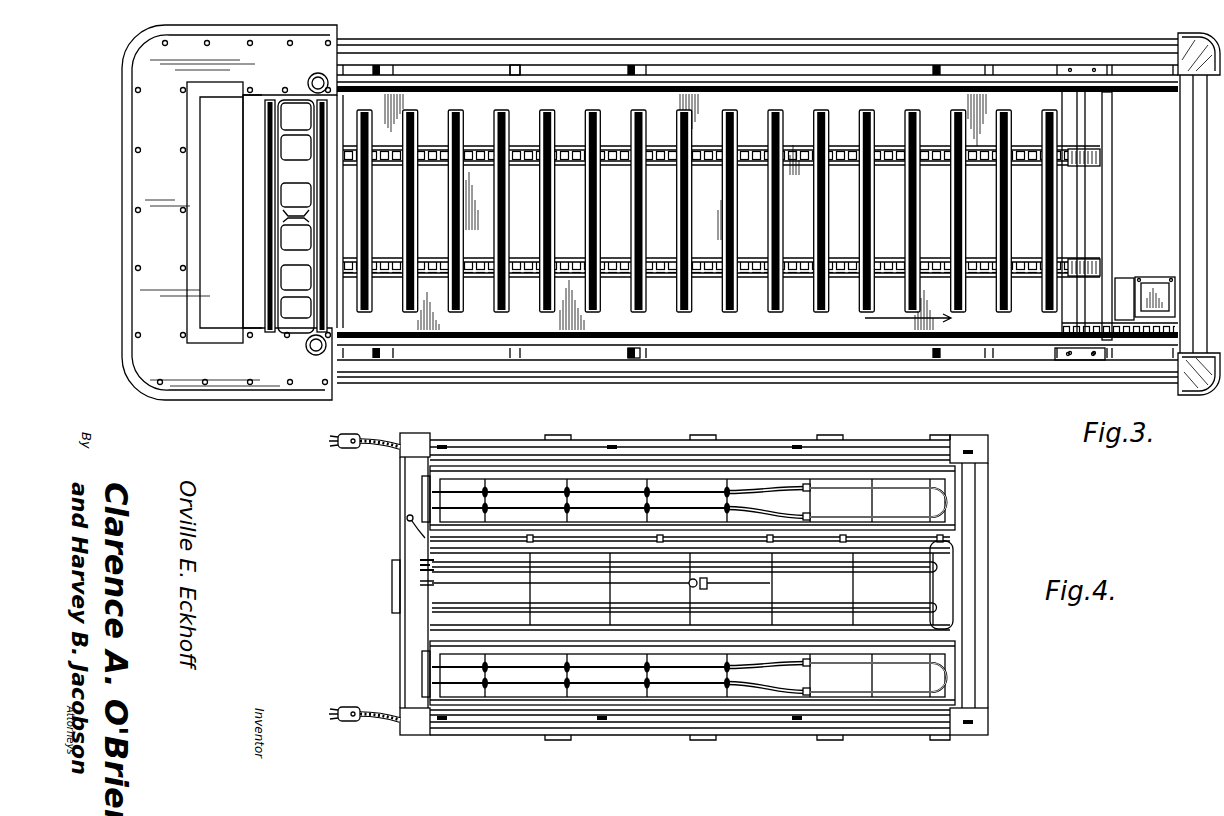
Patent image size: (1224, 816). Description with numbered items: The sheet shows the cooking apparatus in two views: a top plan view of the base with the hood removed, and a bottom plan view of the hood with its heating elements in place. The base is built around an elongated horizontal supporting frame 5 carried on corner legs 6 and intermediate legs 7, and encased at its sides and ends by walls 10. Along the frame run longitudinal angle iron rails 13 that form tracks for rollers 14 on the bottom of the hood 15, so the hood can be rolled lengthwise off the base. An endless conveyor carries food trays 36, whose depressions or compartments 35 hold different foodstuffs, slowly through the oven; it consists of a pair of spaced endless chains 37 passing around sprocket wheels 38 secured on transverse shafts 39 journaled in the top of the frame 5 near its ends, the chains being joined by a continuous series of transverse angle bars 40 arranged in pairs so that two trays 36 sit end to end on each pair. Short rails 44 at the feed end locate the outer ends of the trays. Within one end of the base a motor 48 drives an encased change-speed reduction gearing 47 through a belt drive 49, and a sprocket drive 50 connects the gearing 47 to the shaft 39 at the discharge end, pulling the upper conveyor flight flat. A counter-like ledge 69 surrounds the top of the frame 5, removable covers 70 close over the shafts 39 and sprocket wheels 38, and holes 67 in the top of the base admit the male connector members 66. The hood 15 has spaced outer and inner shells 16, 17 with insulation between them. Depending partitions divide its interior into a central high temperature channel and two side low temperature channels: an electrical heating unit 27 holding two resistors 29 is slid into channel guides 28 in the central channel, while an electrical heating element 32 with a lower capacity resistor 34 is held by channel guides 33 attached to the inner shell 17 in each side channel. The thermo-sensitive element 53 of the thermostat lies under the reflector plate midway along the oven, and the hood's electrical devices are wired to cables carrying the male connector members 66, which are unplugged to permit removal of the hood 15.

In FIG. 3, the supporting frame 5 is at (522, 70).
In FIG. 3, the corner legs 6 is at (1181, 373).
In FIG. 3, the intermediate legs 7 is at (626, 353).
In FIG. 3, the walls 10 is at (689, 42).
In FIG. 3, the angle iron rails 13 is at (546, 84).
In FIG. 3, the compartments 35 is at (285, 115).
In FIG. 3, the trays 36 is at (267, 225).
In FIG. 3, the endless chains 37 is at (785, 260).
In FIG. 3, the sprocket wheels 38 is at (1101, 158).
In FIG. 3, the transverse shafts 39 is at (1088, 205).
In FIG. 3, the transverse angle bars 40 is at (553, 240).
In FIG. 3, the short rails 44 is at (257, 98).
In FIG. 3, the change-speed reduction gearing 47 is at (1153, 295).
In FIG. 3, the motor 48 is at (1078, 362).
In FIG. 3, the belt drive 49 is at (1118, 292).
In FIG. 3, the sprocket drive 50 is at (1132, 341).
In FIG. 3, the holes 67 is at (318, 73).
In FIG. 3, the counter-like ledge 69 is at (232, 390).
In FIG. 3, the removable covers 70 is at (208, 137).
In FIG. 4, the rollers 14 is at (452, 447).
In FIG. 4, the hood 15 is at (998, 519).
In FIG. 4, the outer shell 16 is at (866, 440).
In FIG. 4, the inner shell 17 is at (718, 464).
In FIG. 4, the electrical heating unit 27 is at (958, 594).
In FIG. 4, the channel guides 28 is at (805, 546).
In FIG. 4, the resistors 29 is at (579, 568).
In FIG. 4, the electrical heating element 32 is at (691, 478).
In FIG. 4, the channel guides 33 is at (585, 471).
In FIG. 4, the resistor 34 is at (641, 500).
In FIG. 4, the thermo-sensitive element 53 is at (688, 583).
In FIG. 4, the male connector members 66 is at (345, 449).